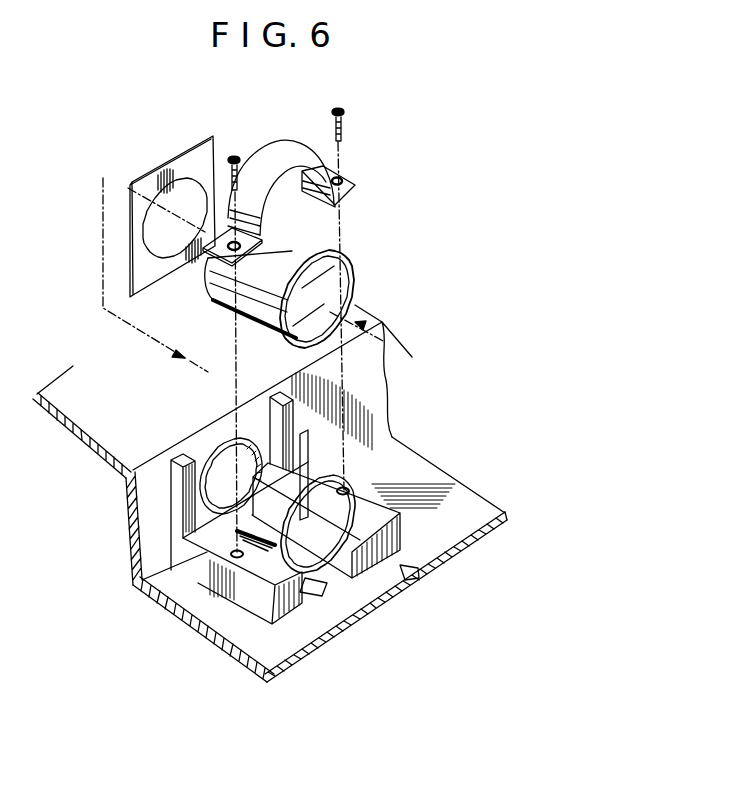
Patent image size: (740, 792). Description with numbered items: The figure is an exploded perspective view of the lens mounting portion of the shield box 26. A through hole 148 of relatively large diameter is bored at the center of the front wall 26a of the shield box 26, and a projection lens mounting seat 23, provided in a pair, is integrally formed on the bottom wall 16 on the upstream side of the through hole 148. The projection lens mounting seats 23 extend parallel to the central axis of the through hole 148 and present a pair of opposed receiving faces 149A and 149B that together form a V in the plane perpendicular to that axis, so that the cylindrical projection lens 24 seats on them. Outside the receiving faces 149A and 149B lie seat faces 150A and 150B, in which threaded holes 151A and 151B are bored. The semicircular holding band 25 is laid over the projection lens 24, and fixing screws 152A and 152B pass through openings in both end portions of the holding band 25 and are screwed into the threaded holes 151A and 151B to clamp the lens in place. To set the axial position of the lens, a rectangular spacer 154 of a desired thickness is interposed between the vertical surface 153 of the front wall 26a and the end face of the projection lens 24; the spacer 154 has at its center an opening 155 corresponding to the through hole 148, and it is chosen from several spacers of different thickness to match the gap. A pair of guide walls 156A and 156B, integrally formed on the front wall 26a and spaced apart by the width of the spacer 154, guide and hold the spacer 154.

The bottom wall 16 is at (268, 684).
The projection lens mounting seat 23 is at (379, 568).
The projection lens 24 is at (318, 248).
The holding band 25 is at (278, 152).
The shield box 26 is at (73, 434).
The front wall 26a is at (133, 533).
The through hole 148 is at (217, 447).
The receiving face 149A is at (318, 600).
The receiving face 149B is at (413, 573).
The seat face 150A is at (250, 575).
The seat face 150B is at (400, 500).
The threaded hole 151A is at (236, 560).
The threaded hole 151B is at (350, 490).
The fixing screw 152A is at (236, 155).
The fixing screw 152B is at (348, 123).
The vertical surface 153 is at (377, 383).
The spacer 154 is at (200, 162).
The opening 155 is at (162, 192).
The guide wall 156A is at (170, 470).
The guide wall 156B is at (282, 398).